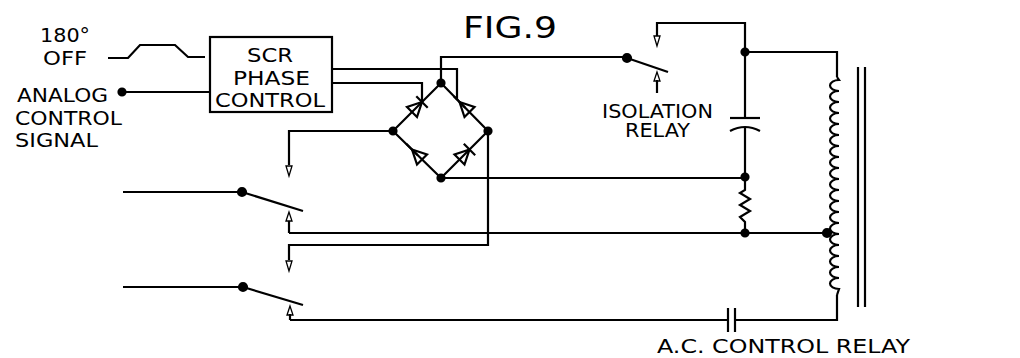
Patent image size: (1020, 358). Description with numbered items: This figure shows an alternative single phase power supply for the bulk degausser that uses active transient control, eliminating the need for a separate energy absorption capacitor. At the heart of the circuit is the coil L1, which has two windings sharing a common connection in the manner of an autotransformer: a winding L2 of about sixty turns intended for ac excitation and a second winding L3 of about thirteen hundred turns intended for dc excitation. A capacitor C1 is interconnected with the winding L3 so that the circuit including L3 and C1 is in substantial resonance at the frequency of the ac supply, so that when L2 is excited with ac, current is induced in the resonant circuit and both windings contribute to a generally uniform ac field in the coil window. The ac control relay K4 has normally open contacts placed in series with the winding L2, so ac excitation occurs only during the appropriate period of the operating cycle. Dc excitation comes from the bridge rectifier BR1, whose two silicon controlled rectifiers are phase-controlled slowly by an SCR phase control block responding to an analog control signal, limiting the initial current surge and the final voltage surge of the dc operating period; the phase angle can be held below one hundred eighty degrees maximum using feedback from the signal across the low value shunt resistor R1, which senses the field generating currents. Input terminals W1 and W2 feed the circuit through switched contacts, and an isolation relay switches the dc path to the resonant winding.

The full wave bridge rectifier BR1 is at (480, 113).
The capacitor C1 is at (753, 131).
The shunt resistor R1 is at (748, 209).
The coil L1 is at (835, 179).
The winding L2 is at (830, 268).
The second winding L3 is at (830, 185).
The ac control relay K4 is at (727, 313).
The winding terminal W1 is at (189, 290).
The winding terminal W2 is at (185, 196).